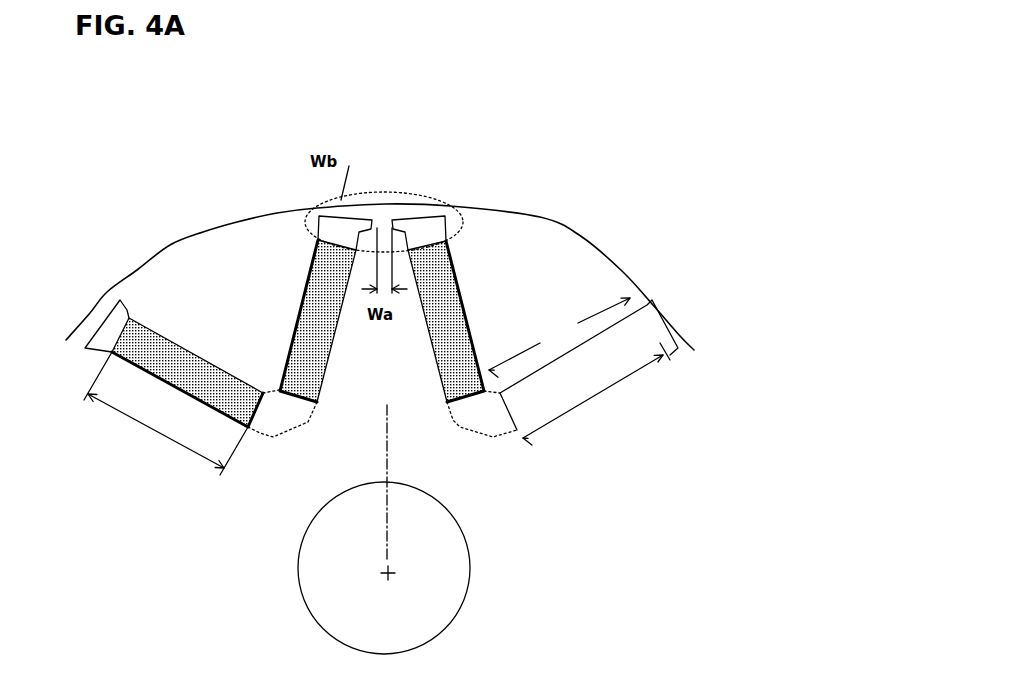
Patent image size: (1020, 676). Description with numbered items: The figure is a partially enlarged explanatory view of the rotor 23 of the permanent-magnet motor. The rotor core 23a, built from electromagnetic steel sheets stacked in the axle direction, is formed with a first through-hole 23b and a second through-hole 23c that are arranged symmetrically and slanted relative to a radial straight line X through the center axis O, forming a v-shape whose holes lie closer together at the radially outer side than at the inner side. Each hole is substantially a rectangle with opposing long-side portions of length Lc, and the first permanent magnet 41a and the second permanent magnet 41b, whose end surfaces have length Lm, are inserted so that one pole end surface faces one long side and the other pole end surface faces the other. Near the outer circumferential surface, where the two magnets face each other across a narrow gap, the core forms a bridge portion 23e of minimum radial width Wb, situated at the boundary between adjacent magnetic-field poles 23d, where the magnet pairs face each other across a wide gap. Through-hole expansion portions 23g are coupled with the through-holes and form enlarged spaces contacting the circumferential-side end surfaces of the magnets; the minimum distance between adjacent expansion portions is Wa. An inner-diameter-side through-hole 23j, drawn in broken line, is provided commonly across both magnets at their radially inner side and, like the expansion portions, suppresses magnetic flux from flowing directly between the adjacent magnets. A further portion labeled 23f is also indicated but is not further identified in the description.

The rotor 23 is at (408, 175).
The rotor core 23a is at (645, 288).
The first through-hole 23b is at (317, 272).
The second through-hole 23c is at (467, 317).
The magnetic-field pole 23d is at (557, 247).
The bridge portion 23e is at (440, 200).
The slot portion 23f is at (600, 397).
The through-hole expansion portion 23g is at (376, 212).
The inner-diameter-side through-hole 23j is at (263, 435).
The first permanent magnet 41a is at (305, 312).
The second permanent magnet 41b is at (167, 345).